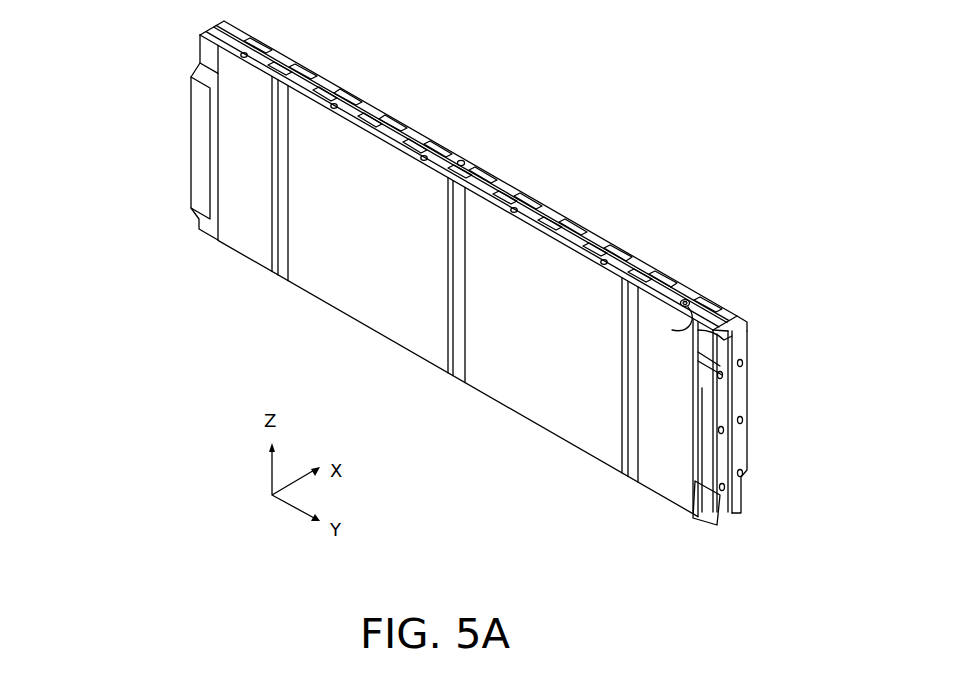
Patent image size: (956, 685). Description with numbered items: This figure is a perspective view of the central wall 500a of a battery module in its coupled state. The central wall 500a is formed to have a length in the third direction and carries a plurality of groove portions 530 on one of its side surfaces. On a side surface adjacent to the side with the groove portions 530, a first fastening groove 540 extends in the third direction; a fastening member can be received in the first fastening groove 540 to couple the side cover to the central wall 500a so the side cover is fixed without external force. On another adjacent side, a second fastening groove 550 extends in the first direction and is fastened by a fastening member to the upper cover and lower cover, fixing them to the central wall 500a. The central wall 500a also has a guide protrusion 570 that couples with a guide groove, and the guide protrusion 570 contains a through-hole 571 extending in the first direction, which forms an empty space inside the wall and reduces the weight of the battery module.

The central wall 500a is at (172, 106).
The groove portion 530 is at (457, 376).
The first fastening groove 540 is at (742, 424).
The second fastening groove 550 is at (608, 240).
The guide protrusion 570 is at (735, 321).
The through-hole 571 is at (683, 297).